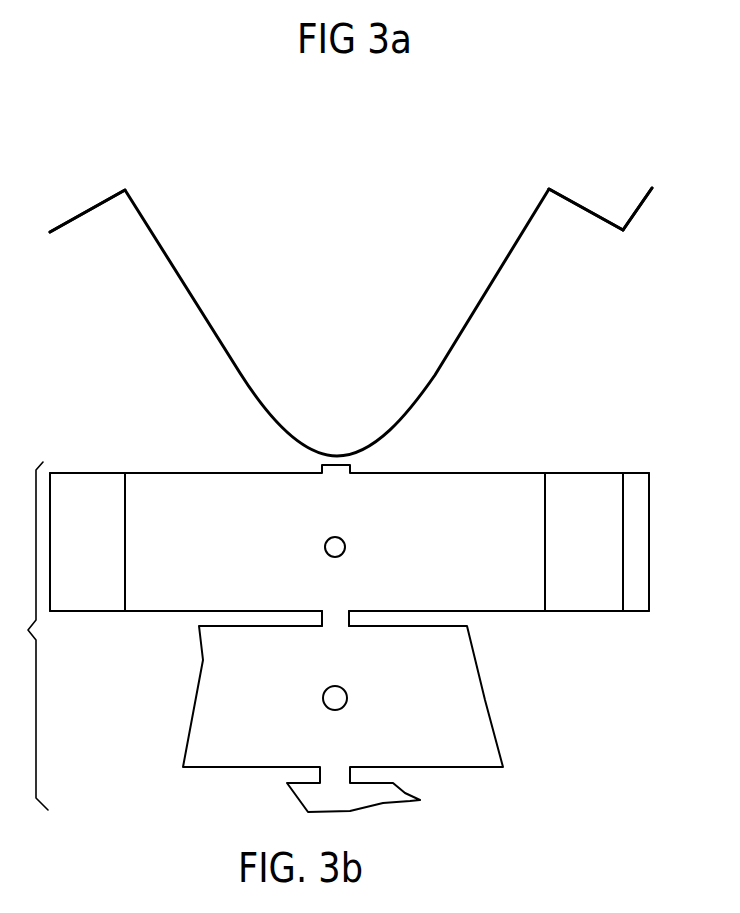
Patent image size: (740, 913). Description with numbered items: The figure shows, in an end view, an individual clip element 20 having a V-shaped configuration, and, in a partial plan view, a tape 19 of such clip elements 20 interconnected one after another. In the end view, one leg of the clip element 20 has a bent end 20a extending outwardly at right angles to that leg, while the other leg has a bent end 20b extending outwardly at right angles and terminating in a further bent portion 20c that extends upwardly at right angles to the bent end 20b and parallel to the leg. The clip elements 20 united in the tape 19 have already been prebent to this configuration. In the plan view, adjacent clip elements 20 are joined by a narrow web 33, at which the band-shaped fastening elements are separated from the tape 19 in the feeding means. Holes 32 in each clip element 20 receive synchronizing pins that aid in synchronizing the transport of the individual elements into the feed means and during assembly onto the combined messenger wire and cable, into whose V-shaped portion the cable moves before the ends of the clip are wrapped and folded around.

In FIG. 3B, the tape 19 is at (28, 636).
In FIG. 3A, the clip element 20 is at (416, 425).
In FIG. 3B, the clip element 20 is at (517, 595).
In FIG. 3A, the bent end 20a is at (90, 205).
In FIG. 3B, the bent end 20a is at (82, 488).
In FIG. 3A, the bent end 20b is at (588, 207).
In FIG. 3B, the bent end 20b is at (588, 446).
In FIG. 3A, the bent portion 20c is at (641, 208).
In FIG. 3B, the bent portion 20c is at (635, 487).
In FIG. 3B, the holes 32 is at (345, 546).
In FIG. 3B, the narrow web 33 is at (335, 617).